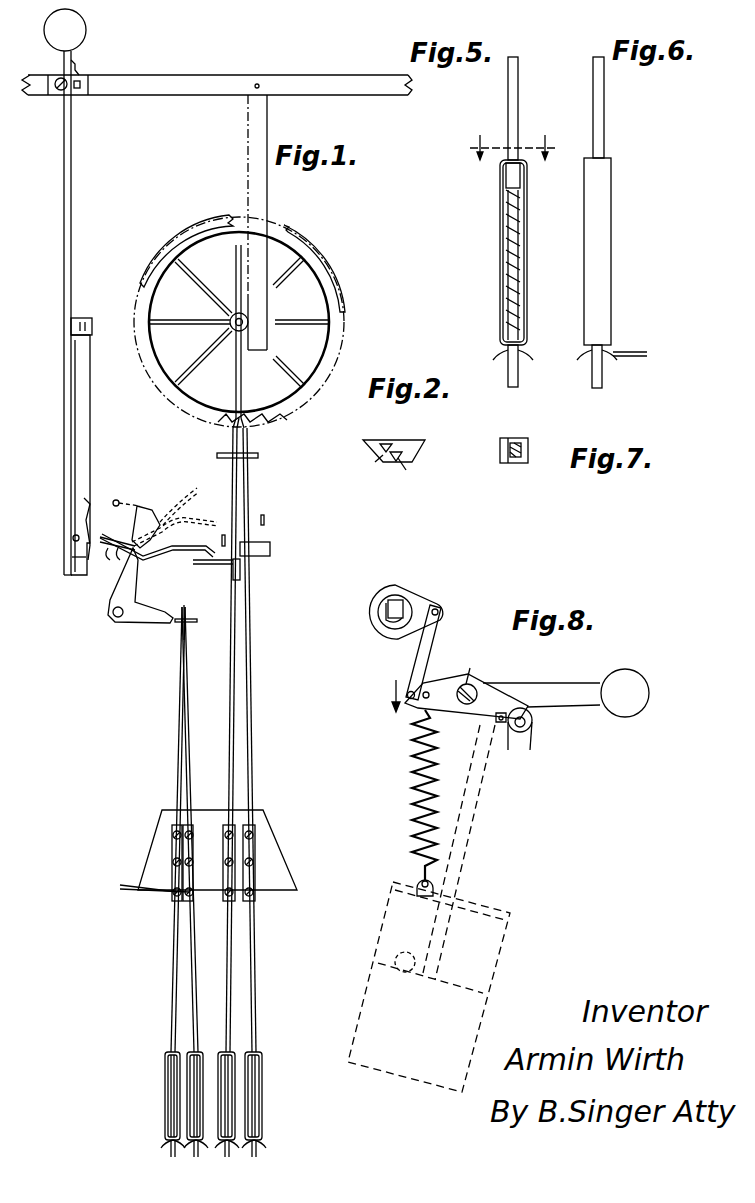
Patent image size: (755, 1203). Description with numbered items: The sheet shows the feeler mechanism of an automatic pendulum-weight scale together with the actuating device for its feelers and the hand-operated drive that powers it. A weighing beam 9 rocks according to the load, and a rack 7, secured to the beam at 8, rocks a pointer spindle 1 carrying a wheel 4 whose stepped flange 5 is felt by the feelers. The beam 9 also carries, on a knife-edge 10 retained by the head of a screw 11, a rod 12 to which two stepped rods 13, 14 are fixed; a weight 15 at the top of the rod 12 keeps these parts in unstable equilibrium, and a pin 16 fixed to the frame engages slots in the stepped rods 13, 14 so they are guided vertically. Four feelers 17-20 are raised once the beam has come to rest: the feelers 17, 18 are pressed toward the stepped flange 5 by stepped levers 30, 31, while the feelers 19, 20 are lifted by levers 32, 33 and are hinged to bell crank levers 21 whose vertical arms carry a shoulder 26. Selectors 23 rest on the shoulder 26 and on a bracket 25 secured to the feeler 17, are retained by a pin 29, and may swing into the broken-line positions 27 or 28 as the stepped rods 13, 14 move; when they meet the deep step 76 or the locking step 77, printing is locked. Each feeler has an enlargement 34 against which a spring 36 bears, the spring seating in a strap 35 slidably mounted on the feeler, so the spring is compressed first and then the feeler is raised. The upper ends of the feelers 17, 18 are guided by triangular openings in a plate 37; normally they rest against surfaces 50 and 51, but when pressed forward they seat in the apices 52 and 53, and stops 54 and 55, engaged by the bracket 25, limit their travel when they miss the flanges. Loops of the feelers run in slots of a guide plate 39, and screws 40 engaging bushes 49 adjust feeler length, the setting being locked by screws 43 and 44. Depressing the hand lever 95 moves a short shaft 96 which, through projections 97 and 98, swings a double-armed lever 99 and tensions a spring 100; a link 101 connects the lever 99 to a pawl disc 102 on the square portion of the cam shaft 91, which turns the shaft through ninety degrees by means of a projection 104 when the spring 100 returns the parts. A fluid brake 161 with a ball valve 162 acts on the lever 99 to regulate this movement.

In FIG. 1, the pointer spindle 1 is at (246, 318).
In FIG. 1, the wheel 4 is at (300, 320).
In FIG. 1, the stepped flange 5 is at (345, 293).
In FIG. 1, the rack 7 is at (247, 175).
In FIG. 5, the rack 7 is at (512, 142).
In FIG. 1, the rack attachment point 8 is at (257, 84).
In FIG. 1, the weighing beam 9 is at (180, 85).
In FIG. 1, the knife-edge 10 is at (78, 88).
In FIG. 1, the screw 11 is at (58, 90).
In FIG. 1, the rod 12 is at (64, 278).
In FIG. 1, the stepped rod 13 is at (82, 498).
In FIG. 1, the stepped rod 14 is at (84, 401).
In FIG. 1, the weight 15 is at (72, 30).
In FIG. 1, the pin 16 is at (73, 536).
In FIG. 1, the feeler 17 is at (232, 661).
In FIG. 1, the feeler 18 is at (250, 661).
In FIG. 1, the feeler 19 is at (189, 752).
In FIG. 1, the feeler 20 is at (178, 741).
In FIG. 1, the bell crank lever 21 is at (108, 618).
In FIG. 1, the selector 23 is at (178, 553).
In FIG. 1, the bracket 25 is at (218, 564).
In FIG. 1, the shoulder 26 is at (118, 560).
In FIG. 1, the broken-line selector position 27 is at (185, 490).
In FIG. 1, the broken-line selector position 28 is at (207, 515).
In FIG. 1, the pin 29 is at (118, 500).
In FIG. 1, the stepped lever 30 is at (227, 1140).
In FIG. 1, the stepped lever 31 is at (266, 1145).
In FIG. 1, the lever 32 is at (196, 1140).
In FIG. 1, the lever 33 is at (160, 1145).
In FIG. 5, the enlargement 34 is at (512, 175).
In FIG. 1, the strap 35 is at (190, 1075).
In FIG. 5, the strap 35 is at (527, 242).
In FIG. 6, the strap 35 is at (600, 262).
In FIG. 7, the strap 35 is at (521, 450).
In FIG. 5, the spring 36 is at (506, 270).
In FIG. 1, the plate 37 is at (258, 456).
In FIG. 2, the plate 37 is at (420, 450).
In FIG. 1, the guide plate 39 is at (155, 826).
In FIG. 1, the screw 40 is at (189, 862).
In FIG. 1, the screw 43 is at (189, 835).
In FIG. 1, the screw 44 is at (189, 892).
In FIG. 1, the bush 49 is at (265, 925).
In FIG. 2, the surface 50 is at (367, 465).
In FIG. 2, the surface 51 is at (406, 474).
In FIG. 2, the apex 52 is at (386, 450).
In FIG. 2, the apex 53 is at (396, 458).
In FIG. 1, the stop 54 is at (226, 540).
In FIG. 1, the stop 55 is at (264, 515).
In FIG. 1, the step 76 is at (80, 557).
In FIG. 1, the locking step 77 is at (90, 318).
In FIG. 8, the cam shaft 91 is at (395, 600).
In FIG. 8, the hand lever 95 is at (630, 683).
In FIG. 8, the short shaft 96 is at (480, 683).
In FIG. 8, the projection 97 is at (469, 666).
In FIG. 8, the projection 98 is at (466, 704).
In FIG. 8, the double-armed lever 99 is at (440, 680).
In FIG. 8, the spring 100 is at (412, 800).
In FIG. 8, the link 101 is at (430, 635).
In FIG. 8, the pawl disc 102 is at (418, 605).
In FIG. 8, the projection 104 is at (388, 602).
In FIG. 8, the fluid brake 161 is at (490, 975).
In FIG. 8, the ball valve 162 is at (396, 958).
In FIG. 5, the feelers 17-20 is at (513, 140).
In FIG. 6, the feelers 17-20 is at (631, 107).